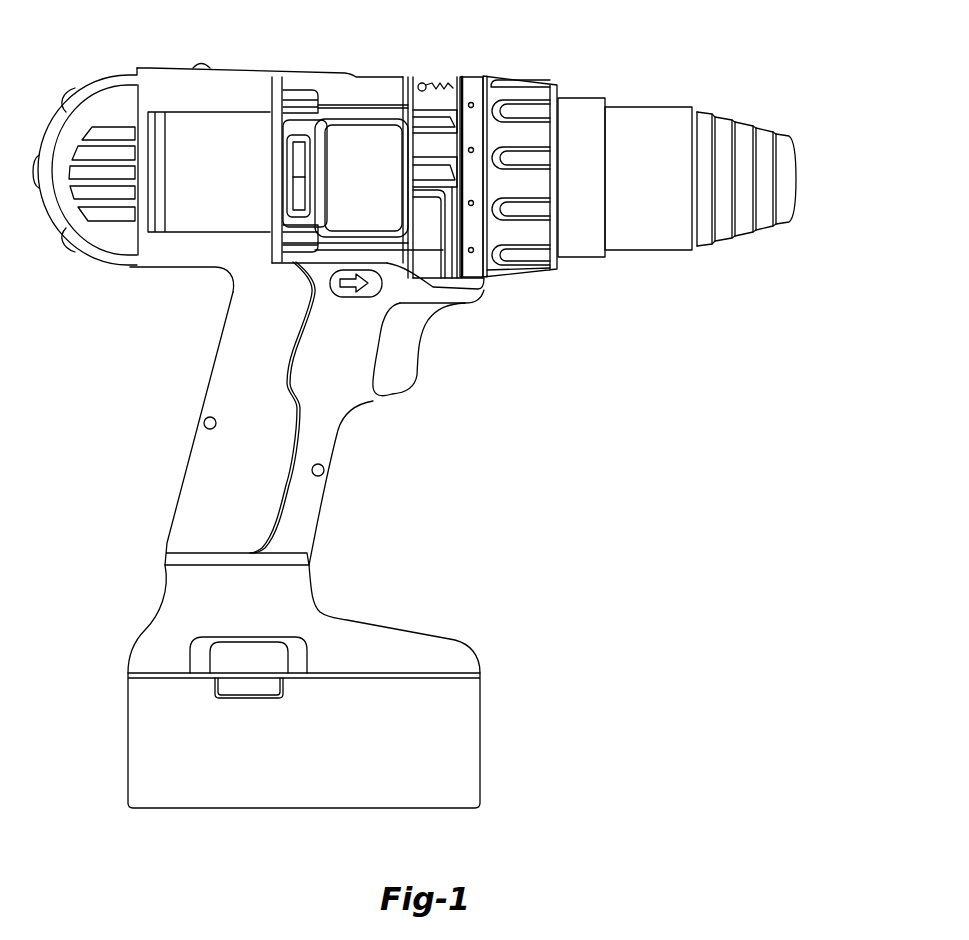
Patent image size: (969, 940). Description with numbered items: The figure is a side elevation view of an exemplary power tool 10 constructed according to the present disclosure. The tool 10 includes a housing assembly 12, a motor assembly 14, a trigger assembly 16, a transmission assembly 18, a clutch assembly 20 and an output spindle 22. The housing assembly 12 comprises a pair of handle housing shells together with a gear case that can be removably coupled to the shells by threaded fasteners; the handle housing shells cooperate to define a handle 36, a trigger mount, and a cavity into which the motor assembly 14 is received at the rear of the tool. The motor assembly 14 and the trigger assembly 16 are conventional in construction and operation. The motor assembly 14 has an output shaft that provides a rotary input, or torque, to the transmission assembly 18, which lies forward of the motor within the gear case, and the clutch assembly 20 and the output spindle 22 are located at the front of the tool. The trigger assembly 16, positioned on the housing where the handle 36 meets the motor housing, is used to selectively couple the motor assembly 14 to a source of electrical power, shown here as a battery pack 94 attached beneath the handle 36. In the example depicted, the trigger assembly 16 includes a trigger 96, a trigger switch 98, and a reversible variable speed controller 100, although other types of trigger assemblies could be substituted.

The tool 10 is at (562, 722).
The housing assembly 12 is at (248, 350).
The motor assembly 14 is at (137, 107).
The trigger assembly 16 is at (440, 353).
The transmission assembly 18 is at (367, 133).
The clutch assembly 20 is at (507, 117).
The output spindle 22 is at (587, 247).
The handle 36 is at (212, 452).
The battery pack 94 is at (433, 780).
The trigger 96 is at (392, 386).
The trigger switch 98 is at (347, 328).
The reversible variable speed controller 100 is at (330, 373).